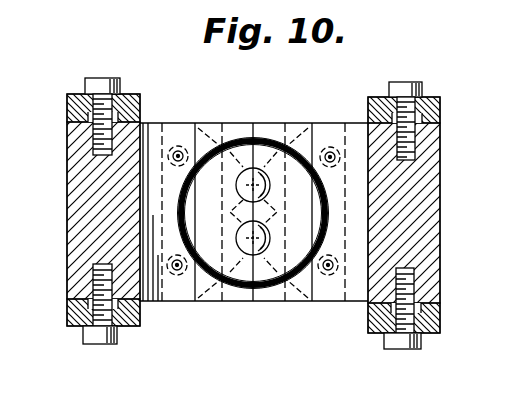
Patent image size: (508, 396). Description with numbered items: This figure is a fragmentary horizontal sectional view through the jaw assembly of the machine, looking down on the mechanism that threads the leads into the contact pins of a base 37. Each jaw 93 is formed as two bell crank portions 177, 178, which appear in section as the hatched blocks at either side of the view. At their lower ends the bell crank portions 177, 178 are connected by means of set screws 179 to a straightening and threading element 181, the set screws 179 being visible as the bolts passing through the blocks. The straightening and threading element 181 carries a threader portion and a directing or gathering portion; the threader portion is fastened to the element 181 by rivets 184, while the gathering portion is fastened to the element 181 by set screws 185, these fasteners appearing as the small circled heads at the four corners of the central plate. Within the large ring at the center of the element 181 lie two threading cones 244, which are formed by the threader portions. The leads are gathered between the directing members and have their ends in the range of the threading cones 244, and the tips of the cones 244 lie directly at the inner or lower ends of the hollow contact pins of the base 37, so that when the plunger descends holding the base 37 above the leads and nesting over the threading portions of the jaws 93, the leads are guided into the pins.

The base 37 is at (223, 144).
The jaw 93 is at (100, 222).
The bell crank portion 177 is at (136, 93).
The bell crank portion 178 is at (76, 327).
The set screw 179 is at (406, 82).
The straightening and threading element 181 is at (147, 301).
The rivet 184 is at (181, 154).
The set screw 185 is at (332, 155).
The threading cone 244 is at (254, 236).